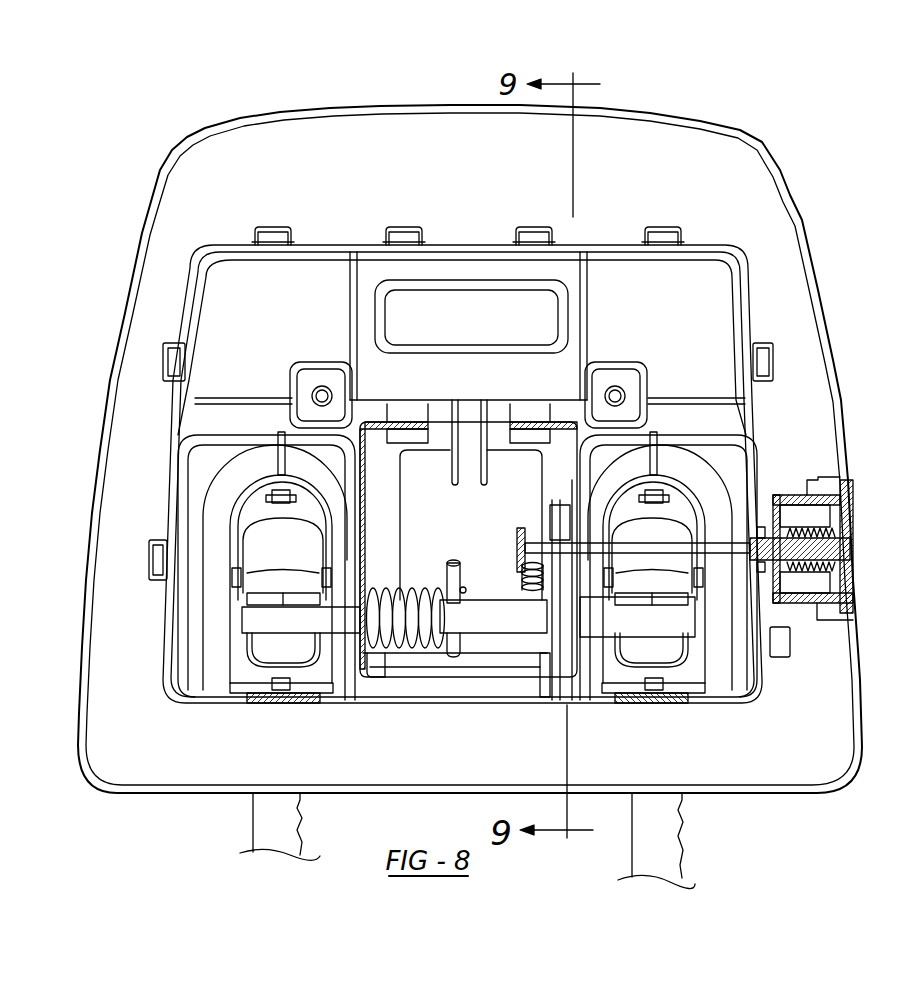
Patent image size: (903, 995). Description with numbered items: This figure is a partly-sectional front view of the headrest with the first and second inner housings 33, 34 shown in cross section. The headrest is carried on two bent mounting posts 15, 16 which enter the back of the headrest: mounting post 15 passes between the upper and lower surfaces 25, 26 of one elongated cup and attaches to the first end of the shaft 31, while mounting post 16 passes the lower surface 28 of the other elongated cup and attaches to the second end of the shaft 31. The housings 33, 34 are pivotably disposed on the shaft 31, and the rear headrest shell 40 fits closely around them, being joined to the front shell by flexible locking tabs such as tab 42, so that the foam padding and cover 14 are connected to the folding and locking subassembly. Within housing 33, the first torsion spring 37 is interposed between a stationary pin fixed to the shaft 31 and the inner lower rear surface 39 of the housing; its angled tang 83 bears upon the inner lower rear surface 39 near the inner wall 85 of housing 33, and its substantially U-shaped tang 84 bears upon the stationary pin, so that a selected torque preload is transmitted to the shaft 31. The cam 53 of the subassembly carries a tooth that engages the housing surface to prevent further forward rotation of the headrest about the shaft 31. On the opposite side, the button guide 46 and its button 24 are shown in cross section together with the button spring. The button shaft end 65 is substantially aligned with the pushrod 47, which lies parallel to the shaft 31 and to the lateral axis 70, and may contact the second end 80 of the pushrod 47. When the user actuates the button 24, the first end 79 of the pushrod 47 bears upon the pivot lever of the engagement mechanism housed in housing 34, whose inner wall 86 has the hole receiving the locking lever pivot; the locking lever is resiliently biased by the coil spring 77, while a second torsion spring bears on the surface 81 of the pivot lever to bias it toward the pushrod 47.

The cover 14 is at (232, 128).
The mounting post 15 is at (253, 820).
The mounting post 16 is at (632, 850).
The button 24 is at (850, 520).
The upper surface of elongated cup 25 is at (232, 578).
The lower surface of elongated cup 26 is at (242, 658).
The lower surface of elongated cup 28 is at (695, 665).
The shaft 31 is at (486, 632).
The first inner housing 33 is at (406, 422).
The second inner housing 34 is at (533, 422).
The first torsion spring 37 is at (425, 592).
The inner lower rear surface 39 is at (393, 657).
The rear headrest shell 40 is at (747, 290).
The flexible locking tab 42 is at (402, 227).
The button guide 46 is at (805, 495).
The pushrod 47 is at (668, 548).
The cam 53 is at (543, 660).
The button shaft end 65 is at (728, 598).
The lateral axis 70 is at (232, 617).
The coil spring 77 is at (522, 574).
The first end of pushrod 79 is at (524, 542).
The second end of pushrod 80 is at (693, 617).
The surface of pivot lever 81 is at (517, 532).
The angled tang 83 is at (370, 668).
The U-shaped tang 84 is at (466, 590).
The inner wall 85 is at (365, 467).
The inner wall 86 is at (577, 453).